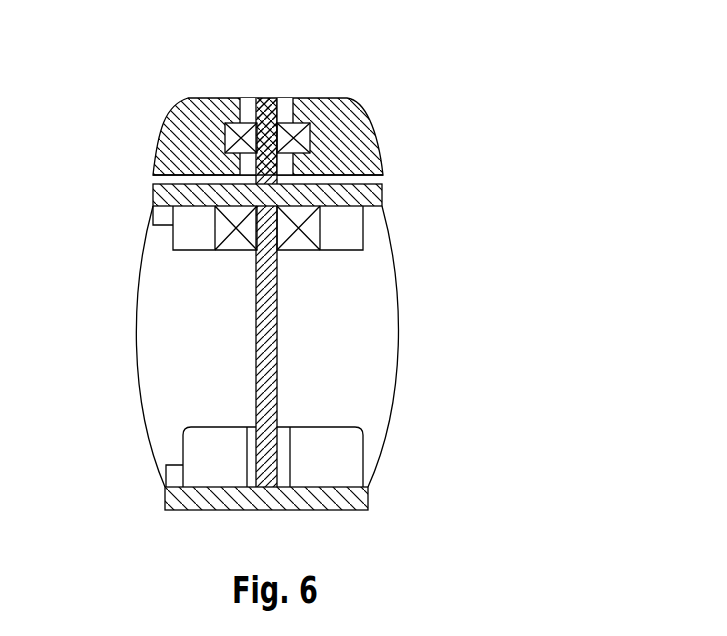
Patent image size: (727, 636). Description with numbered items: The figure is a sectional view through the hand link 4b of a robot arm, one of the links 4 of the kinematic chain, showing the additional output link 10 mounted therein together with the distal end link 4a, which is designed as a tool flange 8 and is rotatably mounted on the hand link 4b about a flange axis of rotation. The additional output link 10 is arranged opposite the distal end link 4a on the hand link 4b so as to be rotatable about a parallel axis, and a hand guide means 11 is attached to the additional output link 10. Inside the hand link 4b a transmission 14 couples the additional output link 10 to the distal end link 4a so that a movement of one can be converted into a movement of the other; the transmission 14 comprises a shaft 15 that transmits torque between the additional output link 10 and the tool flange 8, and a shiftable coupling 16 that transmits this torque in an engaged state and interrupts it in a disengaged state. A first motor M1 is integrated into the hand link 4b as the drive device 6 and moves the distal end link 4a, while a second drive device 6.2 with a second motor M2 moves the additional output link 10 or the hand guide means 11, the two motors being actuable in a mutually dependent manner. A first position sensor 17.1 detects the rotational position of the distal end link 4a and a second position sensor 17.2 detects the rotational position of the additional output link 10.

The links 4 is at (351, 352).
The distal end link 4a is at (359, 498).
The hand link 4b is at (383, 346).
The tool flange 8 is at (360, 498).
The drive device 6 is at (381, 414).
The second drive device 6.2 is at (355, 203).
The first motor M1 is at (273, 457).
The second motor M2 is at (267, 228).
The additional output link 10 is at (306, 109).
The hand guide means 11 is at (185, 115).
The transmission 14 is at (334, 292).
The shaft 15 is at (262, 352).
The shiftable coupling 16 is at (285, 423).
The first position sensor 17.1 is at (173, 478).
The second position sensor 17.2 is at (163, 217).